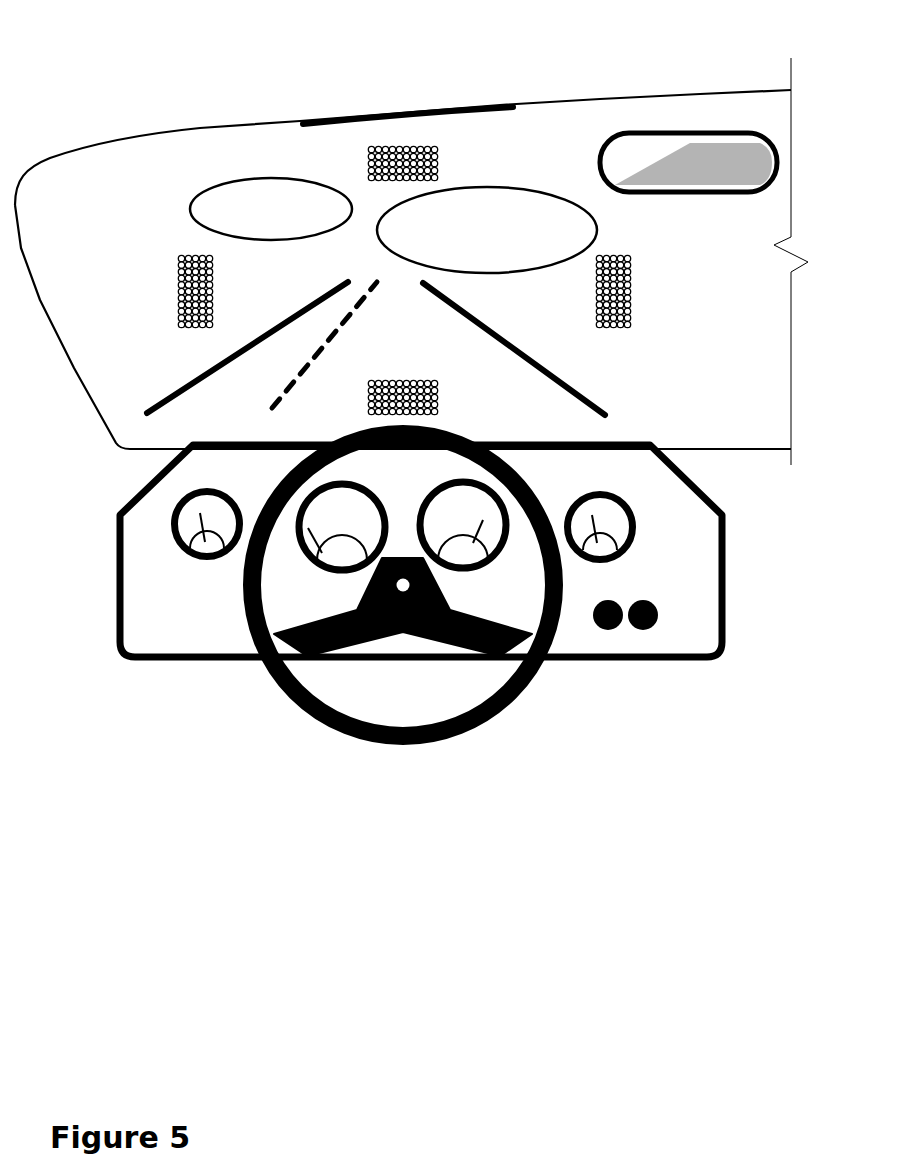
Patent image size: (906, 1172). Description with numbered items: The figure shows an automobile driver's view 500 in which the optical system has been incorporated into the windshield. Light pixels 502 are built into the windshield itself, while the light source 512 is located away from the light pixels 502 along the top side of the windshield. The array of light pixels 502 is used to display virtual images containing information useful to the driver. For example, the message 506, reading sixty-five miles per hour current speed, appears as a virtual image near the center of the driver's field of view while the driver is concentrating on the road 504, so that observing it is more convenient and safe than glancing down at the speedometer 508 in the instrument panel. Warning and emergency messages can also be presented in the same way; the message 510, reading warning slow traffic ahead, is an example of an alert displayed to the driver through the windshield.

The automobile driver's view 500 is at (288, 88).
The light pixels 502 is at (178, 283).
The road 504 is at (363, 308).
The message 506 is at (243, 178).
The speedometer 508 is at (422, 504).
The message 510 is at (482, 186).
The light source 512 is at (420, 115).